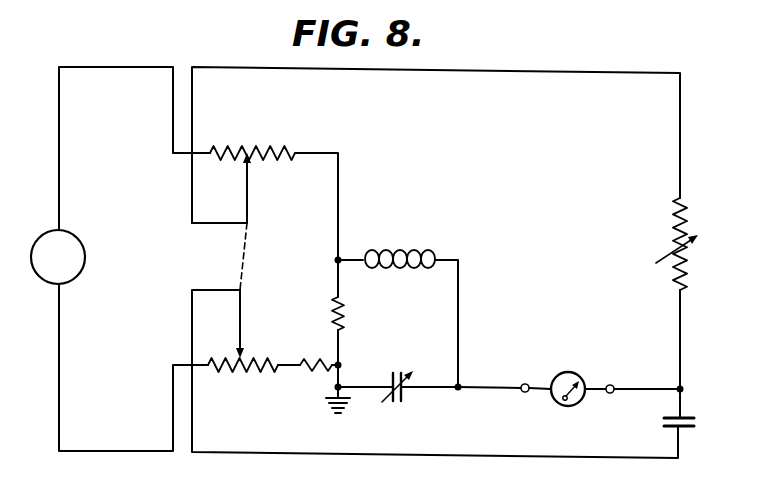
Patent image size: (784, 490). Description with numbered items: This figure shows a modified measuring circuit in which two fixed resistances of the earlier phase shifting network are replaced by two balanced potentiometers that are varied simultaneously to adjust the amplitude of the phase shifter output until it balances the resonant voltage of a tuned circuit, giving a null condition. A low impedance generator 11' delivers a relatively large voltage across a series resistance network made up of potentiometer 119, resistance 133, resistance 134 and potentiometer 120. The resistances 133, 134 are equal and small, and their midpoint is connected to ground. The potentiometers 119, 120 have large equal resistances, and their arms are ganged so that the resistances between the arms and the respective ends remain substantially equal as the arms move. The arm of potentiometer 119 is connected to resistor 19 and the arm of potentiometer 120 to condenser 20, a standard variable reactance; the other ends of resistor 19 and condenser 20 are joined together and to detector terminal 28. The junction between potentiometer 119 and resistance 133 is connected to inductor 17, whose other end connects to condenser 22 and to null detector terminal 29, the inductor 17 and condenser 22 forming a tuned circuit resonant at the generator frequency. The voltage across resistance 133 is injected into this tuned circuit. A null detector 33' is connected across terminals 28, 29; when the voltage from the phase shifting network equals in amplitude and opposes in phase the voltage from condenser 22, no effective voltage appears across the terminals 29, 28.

The generator 11' is at (79, 251).
The potentiometer 119 is at (266, 150).
The potentiometer 120 is at (251, 360).
The resistance 134 is at (313, 371).
The resistance 133 is at (343, 322).
The inductor 17 is at (389, 251).
The condenser 22 is at (403, 392).
The null detector terminal 29 is at (523, 384).
The null detector 33' is at (568, 371).
The detector terminal 28 is at (611, 384).
The resistor 19 is at (672, 234).
The condenser 20 is at (692, 429).